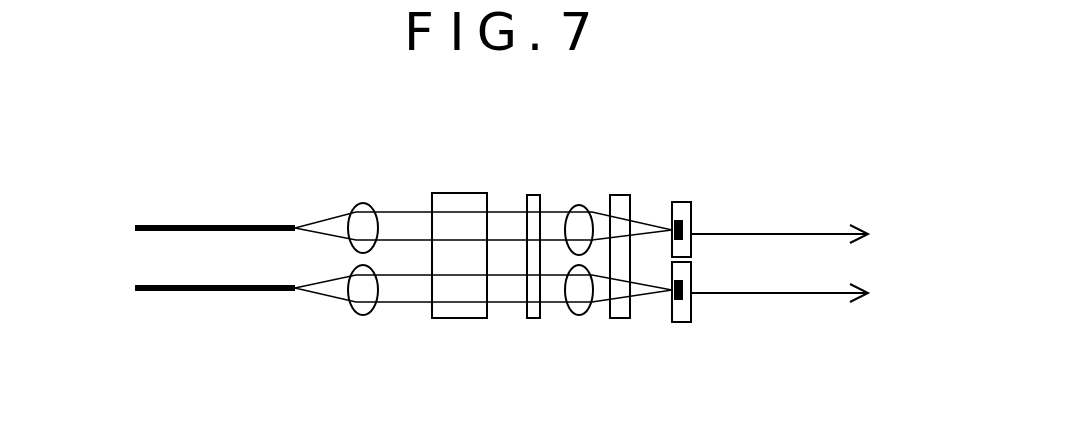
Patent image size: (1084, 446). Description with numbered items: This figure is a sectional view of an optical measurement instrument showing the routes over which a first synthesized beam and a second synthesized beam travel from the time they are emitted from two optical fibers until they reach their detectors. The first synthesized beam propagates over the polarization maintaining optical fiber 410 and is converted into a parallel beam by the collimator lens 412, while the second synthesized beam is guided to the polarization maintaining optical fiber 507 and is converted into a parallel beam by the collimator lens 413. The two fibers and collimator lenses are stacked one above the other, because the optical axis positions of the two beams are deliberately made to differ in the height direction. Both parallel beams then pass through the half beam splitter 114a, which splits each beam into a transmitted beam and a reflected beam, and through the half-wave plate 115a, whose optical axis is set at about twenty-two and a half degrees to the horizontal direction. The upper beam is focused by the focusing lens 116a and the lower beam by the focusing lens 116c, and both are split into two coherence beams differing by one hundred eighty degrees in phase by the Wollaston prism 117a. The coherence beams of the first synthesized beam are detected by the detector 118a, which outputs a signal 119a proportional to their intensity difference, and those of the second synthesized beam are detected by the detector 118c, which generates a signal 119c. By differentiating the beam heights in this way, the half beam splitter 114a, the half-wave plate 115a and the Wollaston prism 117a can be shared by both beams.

The polarization maintaining optical fiber 410 is at (192, 225).
The polarization maintaining optical fiber 507 is at (172, 292).
The collimator lens 412 is at (365, 203).
The collimator lens 413 is at (363, 315).
The half beam splitter 114a is at (444, 318).
The λ/2 plate 115a is at (532, 318).
The focusing lens 116a is at (581, 205).
The focusing lens 116c is at (580, 315).
The Wollaston prism 117a is at (627, 318).
The detector 118a is at (690, 203).
The detector 118c is at (692, 313).
The signal 119a is at (808, 232).
The signal 119c is at (793, 294).